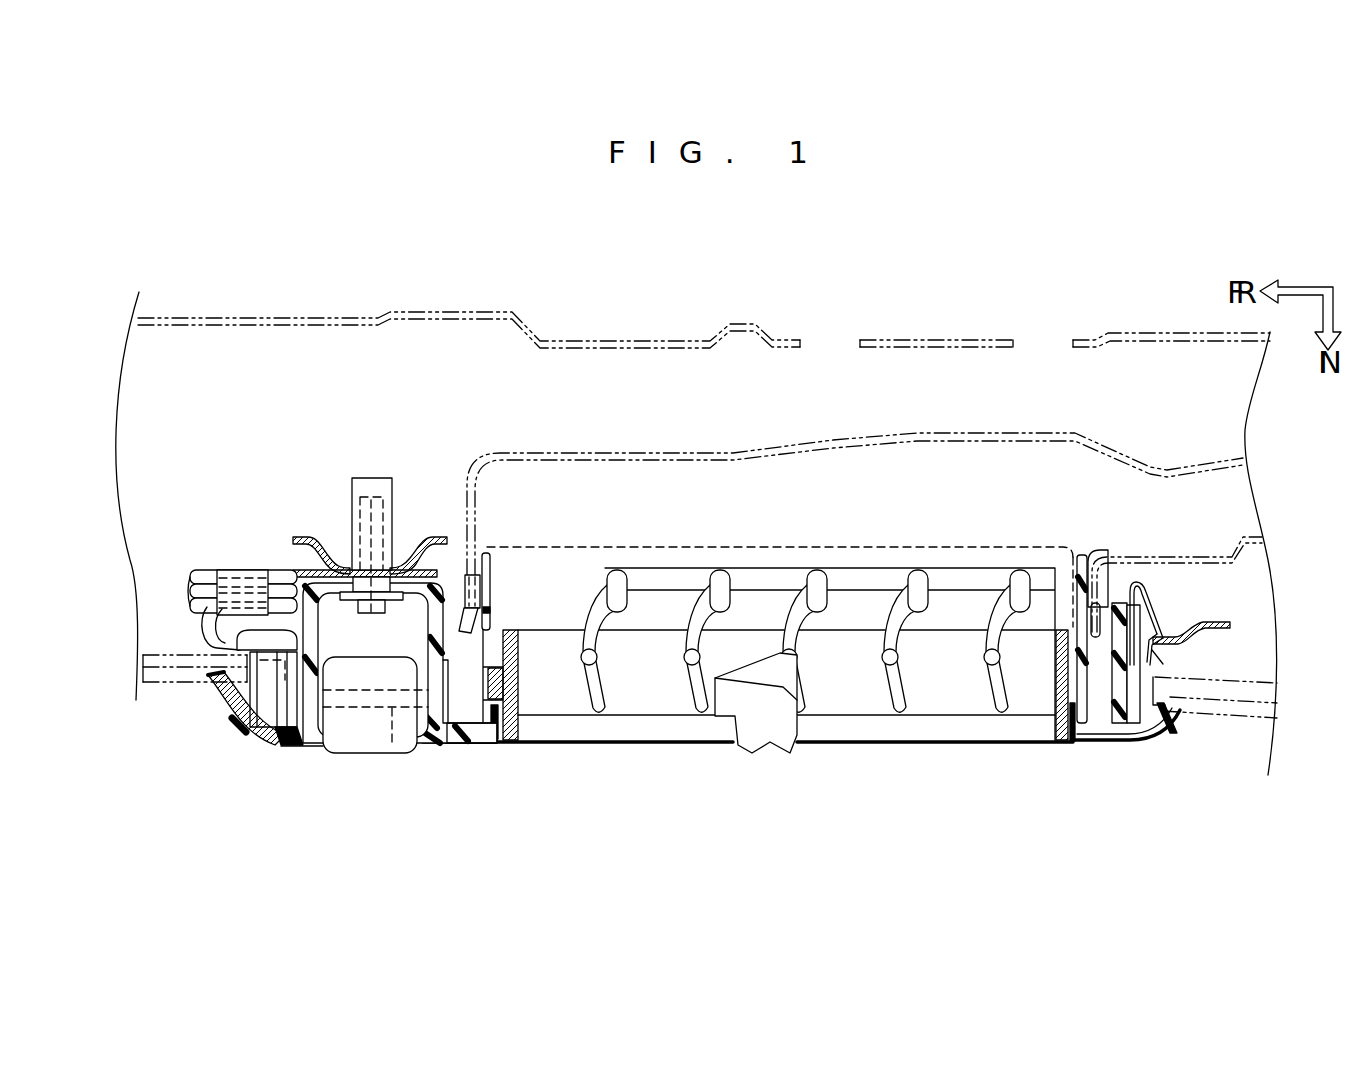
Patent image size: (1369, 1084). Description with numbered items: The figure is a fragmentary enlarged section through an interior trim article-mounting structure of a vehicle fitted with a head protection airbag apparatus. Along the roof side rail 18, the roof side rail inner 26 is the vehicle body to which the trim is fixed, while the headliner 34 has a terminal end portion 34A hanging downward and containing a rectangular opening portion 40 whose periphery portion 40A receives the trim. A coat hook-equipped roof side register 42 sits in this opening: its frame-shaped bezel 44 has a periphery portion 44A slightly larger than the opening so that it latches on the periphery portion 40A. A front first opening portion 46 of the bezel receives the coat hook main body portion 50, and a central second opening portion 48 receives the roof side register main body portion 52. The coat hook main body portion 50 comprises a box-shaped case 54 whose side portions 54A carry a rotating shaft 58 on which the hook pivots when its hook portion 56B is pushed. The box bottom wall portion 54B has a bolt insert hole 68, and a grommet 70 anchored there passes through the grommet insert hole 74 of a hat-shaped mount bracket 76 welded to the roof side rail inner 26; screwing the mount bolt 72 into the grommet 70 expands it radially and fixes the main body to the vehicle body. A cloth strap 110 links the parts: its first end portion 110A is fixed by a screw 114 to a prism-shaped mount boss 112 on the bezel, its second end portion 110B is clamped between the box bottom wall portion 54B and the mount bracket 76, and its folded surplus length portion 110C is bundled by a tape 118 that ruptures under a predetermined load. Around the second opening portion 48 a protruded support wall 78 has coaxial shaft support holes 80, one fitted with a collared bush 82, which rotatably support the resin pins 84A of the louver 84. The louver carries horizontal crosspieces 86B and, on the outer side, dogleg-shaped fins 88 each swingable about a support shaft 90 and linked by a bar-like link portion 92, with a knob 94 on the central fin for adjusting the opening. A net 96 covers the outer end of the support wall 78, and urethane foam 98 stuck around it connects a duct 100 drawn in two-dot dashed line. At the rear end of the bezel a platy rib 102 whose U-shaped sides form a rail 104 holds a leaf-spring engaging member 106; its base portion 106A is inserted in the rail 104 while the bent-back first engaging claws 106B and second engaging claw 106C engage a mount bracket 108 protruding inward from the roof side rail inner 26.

The roof side rail 18 is at (280, 328).
The roof side rail inner 26 is at (458, 314).
The headliner 34 is at (143, 718).
The terminal end portion 34A is at (172, 718).
The opening portion 40 is at (1142, 742).
The periphery portion 40A is at (1196, 720).
The coat hook-equipped roof side register 42 is at (652, 777).
The bezel 44 is at (1086, 744).
The periphery portion 44A is at (1168, 735).
The first opening portion 46 is at (337, 747).
The second opening portion 48 is at (1057, 731).
The coat hook main body portion 50 is at (373, 770).
The roof side register main body portion 52 is at (842, 755).
The case 54 is at (490, 627).
The side portions 54A is at (428, 720).
The box bottom wall portion 54B is at (400, 542).
The hook portion 56B is at (417, 753).
The rotating shaft 58 is at (384, 745).
The bolt insert hole 68 is at (362, 590).
The grommet 70 is at (372, 478).
The mount bolt 72 is at (387, 597).
The grommet insert hole 74 is at (352, 570).
The mount bracket 76 is at (303, 537).
The support wall 78 is at (492, 556).
The shaft support holes 80 is at (505, 683).
The collared bush 82 is at (497, 687).
The louver 84 is at (519, 666).
The resin pins 84A is at (523, 683).
The horizontal crosspieces 86B is at (915, 742).
The fins 88 is at (680, 580).
The support shaft 90 is at (597, 657).
The link portion 92 is at (767, 580).
The knob 94 is at (748, 745).
The net 96 is at (828, 547).
The urethane foam 98 is at (1098, 550).
The duct 100 is at (953, 438).
The rib 102 is at (1123, 603).
The rail 104 is at (1140, 657).
The engaging member 106 is at (1162, 597).
The base portion 106A is at (1073, 580).
The first engaging claws 106B is at (1160, 596).
The second engaging claw 106C is at (1165, 647).
The mount bracket 108 is at (1220, 630).
The strap 110 is at (196, 571).
The first end portion 110A is at (268, 735).
The second end portion 110B is at (412, 568).
The surplus length portion 110C is at (190, 590).
The mount boss 112 is at (225, 715).
The screw 114 is at (205, 630).
The tape 118 is at (238, 570).